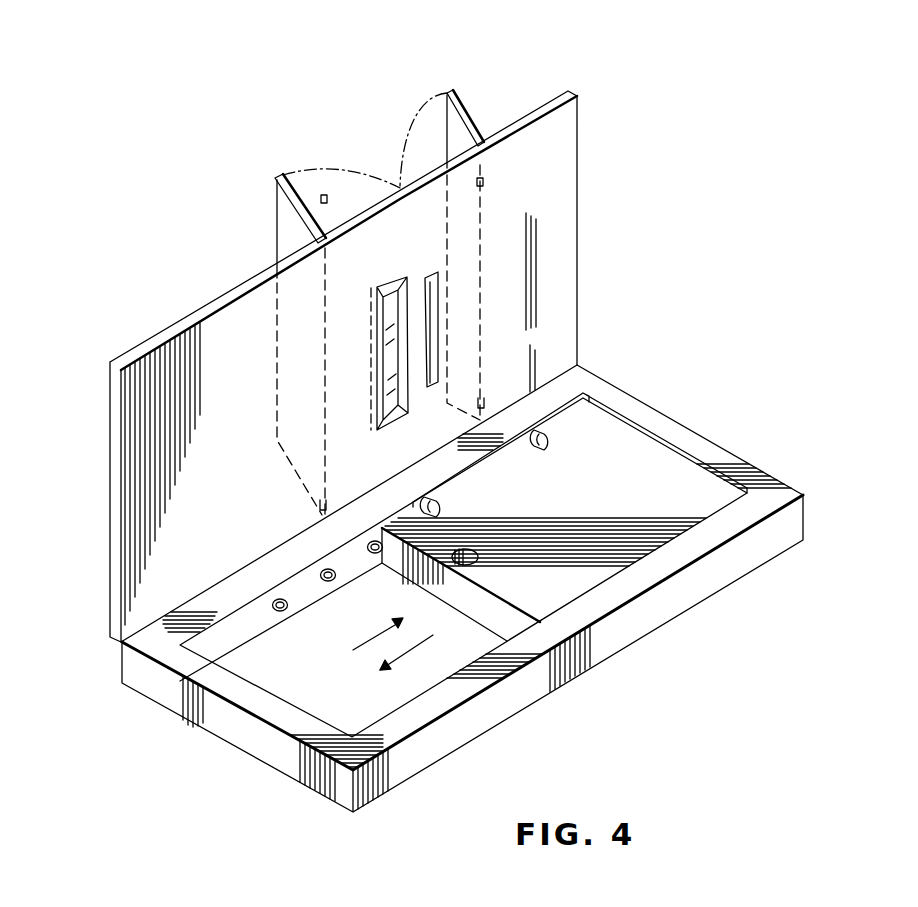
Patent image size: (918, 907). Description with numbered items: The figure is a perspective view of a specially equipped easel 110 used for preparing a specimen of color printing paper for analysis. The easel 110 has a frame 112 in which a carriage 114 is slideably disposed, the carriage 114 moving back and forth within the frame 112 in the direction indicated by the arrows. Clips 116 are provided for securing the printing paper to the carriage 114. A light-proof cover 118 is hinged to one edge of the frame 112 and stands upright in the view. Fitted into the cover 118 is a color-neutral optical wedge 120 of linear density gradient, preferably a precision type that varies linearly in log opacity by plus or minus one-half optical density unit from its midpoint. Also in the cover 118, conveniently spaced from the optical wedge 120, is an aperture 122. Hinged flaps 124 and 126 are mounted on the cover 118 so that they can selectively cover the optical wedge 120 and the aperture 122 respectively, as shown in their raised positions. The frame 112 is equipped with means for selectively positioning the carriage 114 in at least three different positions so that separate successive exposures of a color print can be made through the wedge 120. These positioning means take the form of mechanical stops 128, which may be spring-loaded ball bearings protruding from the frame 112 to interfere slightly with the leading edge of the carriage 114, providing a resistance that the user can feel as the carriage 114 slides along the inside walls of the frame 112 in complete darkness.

The easel 110 is at (458, 425).
The frame 112 is at (690, 440).
The carriage 114 is at (688, 493).
The clips 116 is at (550, 441).
The light-proof cover 118 is at (560, 158).
The color-neutral optical wedge 120 is at (387, 321).
The aperture 122 is at (435, 285).
The hinged flap 124 is at (282, 203).
The hinged flap 126 is at (457, 105).
The mechanical stops 128 is at (366, 553).